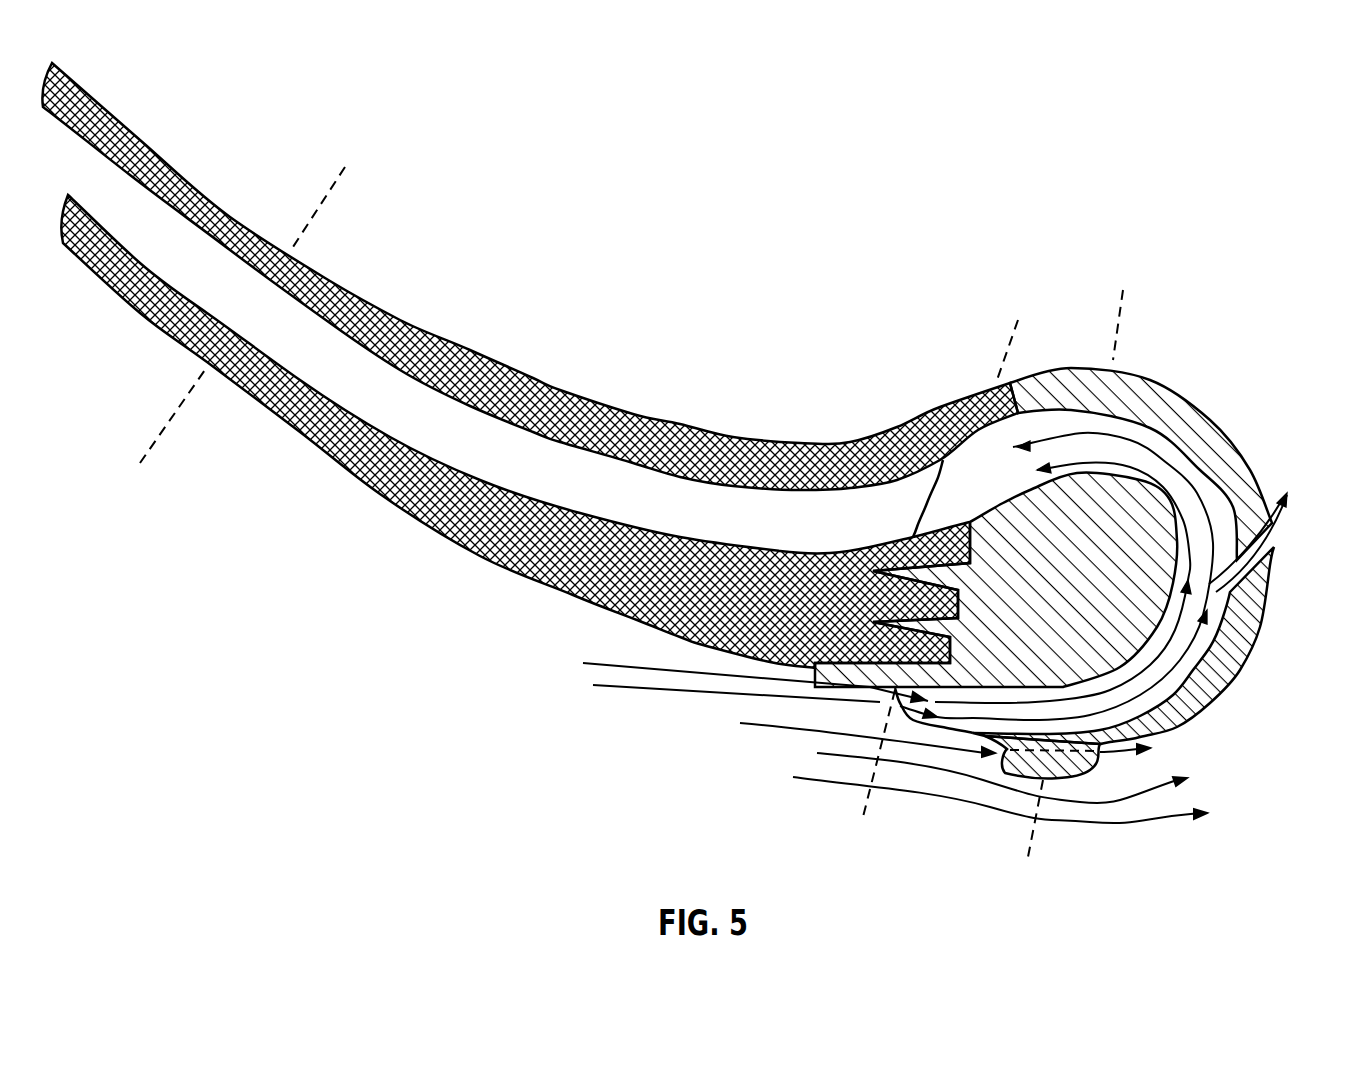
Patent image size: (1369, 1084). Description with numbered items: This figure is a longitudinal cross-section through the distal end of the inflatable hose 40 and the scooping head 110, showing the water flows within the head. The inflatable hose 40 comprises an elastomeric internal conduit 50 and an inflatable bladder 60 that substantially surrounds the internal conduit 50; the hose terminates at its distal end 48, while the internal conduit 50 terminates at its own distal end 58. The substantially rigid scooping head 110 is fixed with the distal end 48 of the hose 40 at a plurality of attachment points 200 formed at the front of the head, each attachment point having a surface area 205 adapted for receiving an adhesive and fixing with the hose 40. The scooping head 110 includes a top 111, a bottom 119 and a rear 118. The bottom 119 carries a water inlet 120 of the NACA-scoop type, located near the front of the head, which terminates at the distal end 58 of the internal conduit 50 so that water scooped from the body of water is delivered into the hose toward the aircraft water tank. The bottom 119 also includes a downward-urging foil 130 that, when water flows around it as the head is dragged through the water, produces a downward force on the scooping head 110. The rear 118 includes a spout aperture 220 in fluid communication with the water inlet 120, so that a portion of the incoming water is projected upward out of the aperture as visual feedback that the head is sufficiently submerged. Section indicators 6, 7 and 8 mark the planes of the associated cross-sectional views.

The inflatable hose 40 is at (140, 140).
The distal end of the inflatable hose 48 is at (943, 403).
The elastomeric internal conduit 50 is at (323, 323).
The distal end of the internal conduit 58 is at (893, 507).
The inflatable bladder 60 is at (447, 362).
The scooping head 110 is at (1178, 300).
The top of the scooping head 111 is at (1070, 365).
The rear of the scooping head 118 is at (1265, 613).
The bottom of the scooping head 119 is at (975, 733).
The water inlet 120 is at (880, 704).
The downward-urging foil 130 is at (1067, 775).
The attachment points 200 is at (973, 557).
The surface area 205 is at (977, 613).
The spout aperture 220 is at (1273, 542).
The section line 6- 6 is at (1018, 320).
The section line 7- 7 is at (1123, 290).
The section line 8- 8 is at (345, 167).